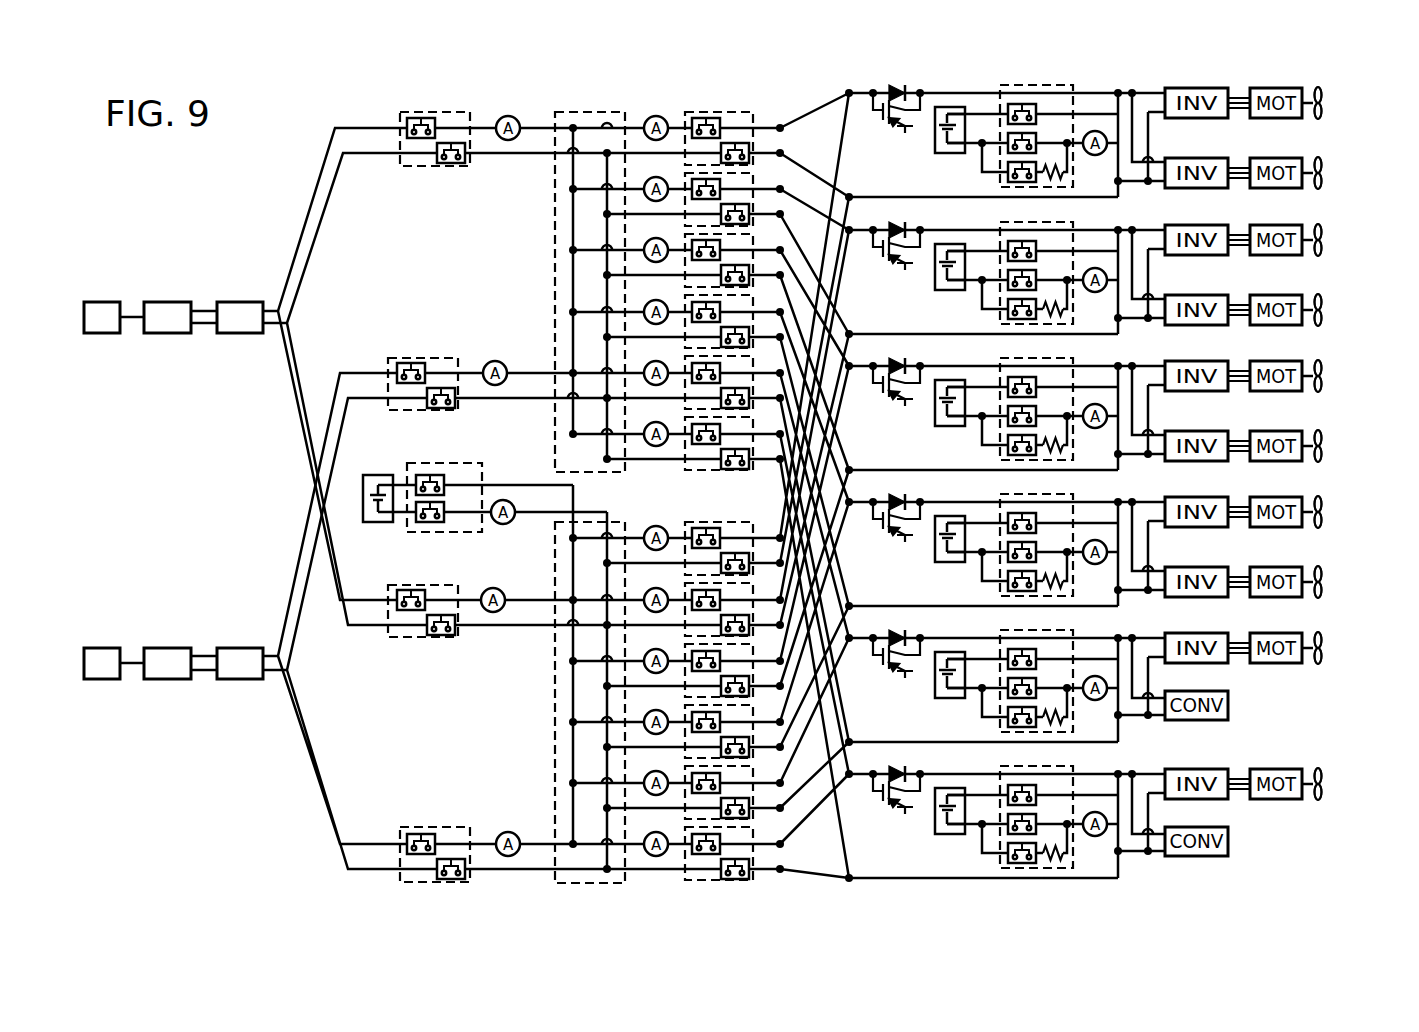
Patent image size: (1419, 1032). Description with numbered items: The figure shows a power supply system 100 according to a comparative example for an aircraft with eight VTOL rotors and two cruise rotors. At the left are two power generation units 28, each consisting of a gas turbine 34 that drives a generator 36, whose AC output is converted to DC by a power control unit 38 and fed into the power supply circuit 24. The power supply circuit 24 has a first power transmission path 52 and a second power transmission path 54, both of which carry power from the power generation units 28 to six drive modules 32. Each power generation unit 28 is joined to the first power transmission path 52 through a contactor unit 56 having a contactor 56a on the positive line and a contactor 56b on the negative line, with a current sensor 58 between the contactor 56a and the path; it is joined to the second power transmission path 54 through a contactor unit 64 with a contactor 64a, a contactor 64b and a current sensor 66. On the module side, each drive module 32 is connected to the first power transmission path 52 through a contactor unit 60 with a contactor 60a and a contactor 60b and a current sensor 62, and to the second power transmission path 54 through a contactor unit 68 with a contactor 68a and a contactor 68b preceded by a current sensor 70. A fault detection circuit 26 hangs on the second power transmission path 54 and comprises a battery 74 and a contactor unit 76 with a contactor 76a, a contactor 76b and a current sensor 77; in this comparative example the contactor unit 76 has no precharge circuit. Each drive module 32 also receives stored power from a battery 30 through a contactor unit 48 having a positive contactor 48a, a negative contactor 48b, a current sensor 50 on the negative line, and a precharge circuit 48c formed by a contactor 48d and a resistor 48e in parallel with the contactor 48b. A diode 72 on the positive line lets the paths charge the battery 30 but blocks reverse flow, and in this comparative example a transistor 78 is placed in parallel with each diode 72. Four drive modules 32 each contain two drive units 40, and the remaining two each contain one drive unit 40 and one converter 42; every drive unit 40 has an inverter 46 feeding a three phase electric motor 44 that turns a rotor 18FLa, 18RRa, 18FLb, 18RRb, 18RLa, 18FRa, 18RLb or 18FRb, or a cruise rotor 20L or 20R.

The power supply system 100 is at (197, 186).
The power generation unit 28 is at (172, 481).
The gas turbine 34 is at (102, 335).
The generator 36 is at (168, 335).
The power control unit 38 is at (237, 335).
The contactor unit 56 is at (390, 245).
The contactor 56a is at (436, 122).
The contactor 56b is at (440, 164).
The current sensor 58 is at (511, 115).
The first power transmission path 52 is at (563, 112).
The second power transmission path 54 is at (553, 740).
The current sensor 62 is at (656, 115).
The contactor unit 60 is at (726, 267).
The contactor 60a is at (706, 118).
The contactor 60b is at (738, 142).
The power supply circuit 24 is at (783, 98).
The fault detection circuit 26 is at (388, 491).
The battery 74 is at (362, 497).
The contactor unit 76 is at (417, 491).
The contactor 76a is at (428, 473).
The contactor 76b is at (430, 524).
The current sensor 77 is at (503, 500).
The contactor unit 64 is at (398, 718).
The contactor 64a is at (402, 592).
The contactor 64b is at (440, 637).
The current sensor 66 is at (493, 613).
The contactor unit 68 is at (700, 673).
The contactor 68a is at (706, 528).
The contactor 68b is at (738, 552).
The ammeter 70 is at (650, 527).
The diode 72 is at (891, 86).
The transistor 78 is at (888, 133).
The battery 30 is at (934, 128).
The contactor unit 48 is at (992, 473).
The contactor 48a is at (1030, 108).
The contactor 48b is at (1009, 148).
The precharge circuit 48c is at (1032, 187).
The contactor 48d is at (1008, 178).
The resistor 48e is at (1053, 184).
The current sensor 50 is at (1096, 157).
The drive module 32 is at (1158, 88).
The inverter 46 is at (1208, 118).
The electric motor 44 is at (1278, 118).
The drive unit 40 is at (1305, 92).
The converter 42 is at (1186, 721).
The rotor 18FLa is at (1325, 103).
The rotor 18RRa is at (1325, 173).
The rotor 18FLb is at (1325, 240).
The rotor 18RRb is at (1325, 310).
The rotor 18RLa is at (1325, 376).
The rotor 18FRa is at (1325, 446).
The rotor 18RLb is at (1325, 512).
The rotor 18FRb is at (1325, 582).
The rotor 20L is at (1325, 648).
The rotor 20R is at (1325, 784).